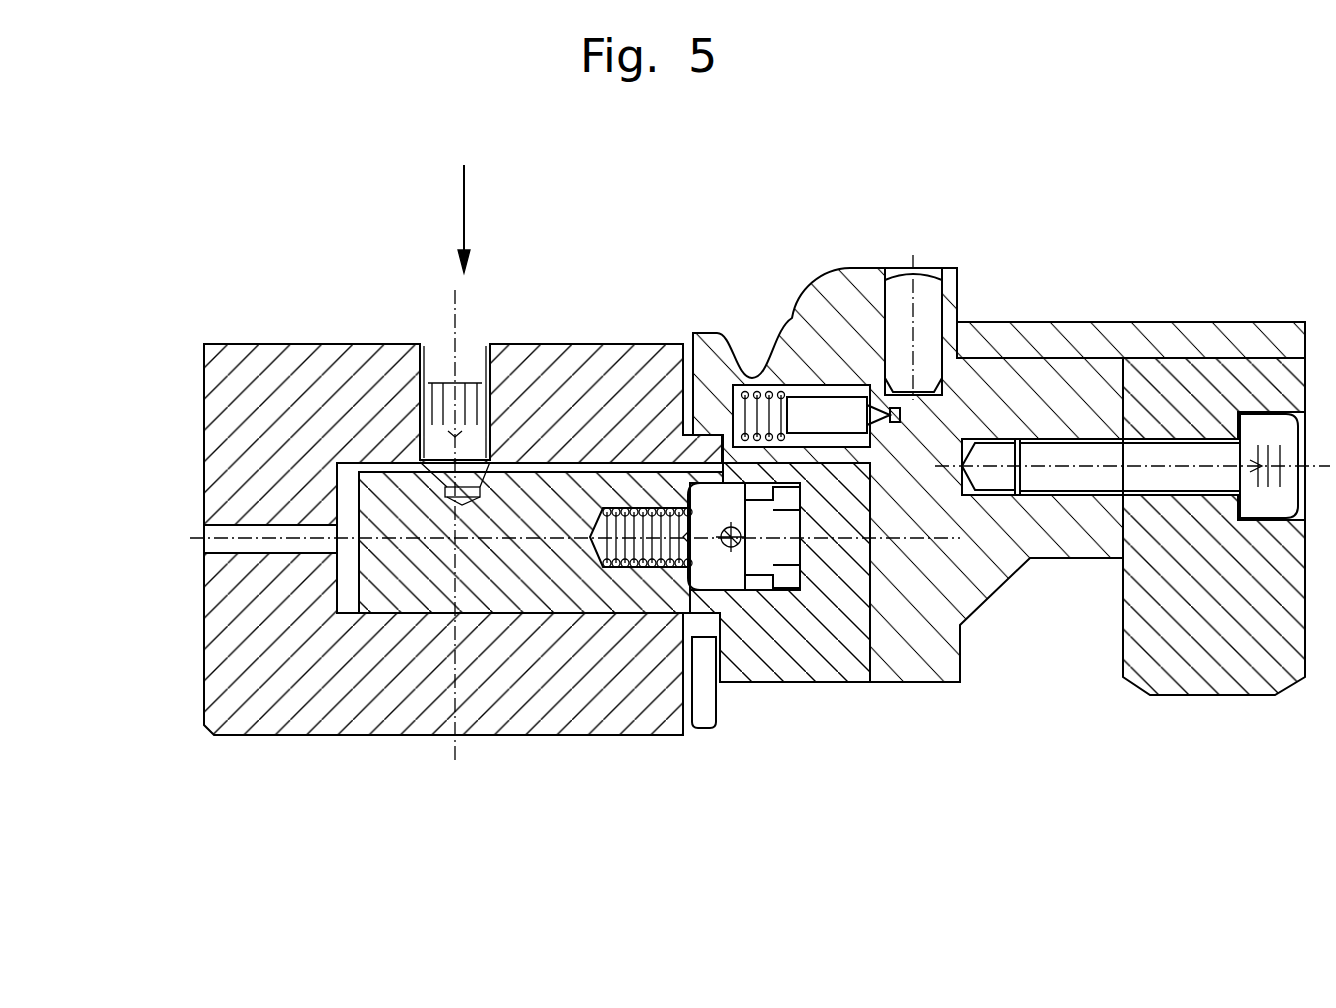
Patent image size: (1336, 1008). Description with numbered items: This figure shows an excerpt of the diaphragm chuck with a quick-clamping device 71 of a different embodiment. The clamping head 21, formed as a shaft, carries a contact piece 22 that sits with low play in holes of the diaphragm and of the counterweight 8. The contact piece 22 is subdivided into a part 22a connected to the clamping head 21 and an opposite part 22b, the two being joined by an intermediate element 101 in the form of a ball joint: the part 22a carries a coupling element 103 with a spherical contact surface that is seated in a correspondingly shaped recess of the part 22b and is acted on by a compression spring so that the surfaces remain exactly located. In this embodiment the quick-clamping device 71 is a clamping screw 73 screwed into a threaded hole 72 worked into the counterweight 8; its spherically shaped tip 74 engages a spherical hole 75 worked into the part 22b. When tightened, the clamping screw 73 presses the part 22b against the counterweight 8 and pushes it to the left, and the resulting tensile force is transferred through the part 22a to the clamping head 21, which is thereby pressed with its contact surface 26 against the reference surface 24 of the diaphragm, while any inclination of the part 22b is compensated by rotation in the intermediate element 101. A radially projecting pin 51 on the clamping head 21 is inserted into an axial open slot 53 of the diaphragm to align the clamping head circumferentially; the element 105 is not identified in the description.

The counterweight 8 is at (295, 342).
The clamping head 21 is at (1063, 322).
The contact piece 22 is at (352, 565).
The part of the contact piece 22a is at (820, 600).
The part of the contact piece 22b is at (420, 590).
The second reference surface 24 is at (880, 660).
The contact surface 26 is at (868, 642).
The pin 51 is at (880, 300).
The open slot 53 is at (952, 288).
The quick-clamping device 71 is at (462, 438).
The threaded hole 72 is at (428, 362).
The clamping screw 73 is at (485, 400).
The spherically shaped tip 74 is at (445, 490).
The spherical hole 75 is at (455, 470).
The intermediate element 101 is at (630, 637).
The coupling element 103 is at (745, 592).
The retaining ring 105 is at (702, 650).